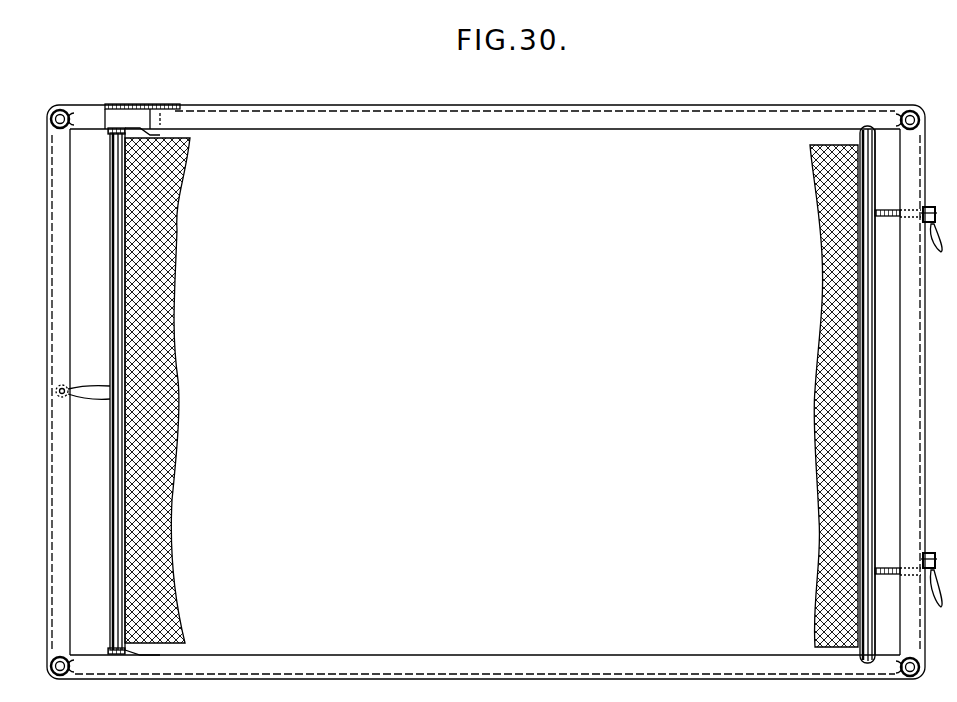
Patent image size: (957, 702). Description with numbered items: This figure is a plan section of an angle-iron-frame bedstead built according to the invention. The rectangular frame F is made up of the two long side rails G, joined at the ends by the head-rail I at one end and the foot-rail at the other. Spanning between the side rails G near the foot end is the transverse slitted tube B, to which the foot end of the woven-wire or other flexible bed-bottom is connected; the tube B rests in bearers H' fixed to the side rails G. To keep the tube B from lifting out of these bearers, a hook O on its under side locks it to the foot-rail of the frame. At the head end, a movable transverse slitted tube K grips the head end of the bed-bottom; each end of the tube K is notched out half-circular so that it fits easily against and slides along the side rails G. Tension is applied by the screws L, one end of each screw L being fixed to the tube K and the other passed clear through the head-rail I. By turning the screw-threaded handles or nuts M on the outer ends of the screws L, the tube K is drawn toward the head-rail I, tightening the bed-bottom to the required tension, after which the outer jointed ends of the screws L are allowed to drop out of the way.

The frame F is at (475, 392).
The side rail G is at (485, 386).
The transverse slitted tube B is at (137, 391).
The movable transverse slitted tube K is at (854, 394).
The head-rail I is at (891, 392).
The bracket H' is at (120, 391).
The hook O is at (83, 384).
The screw L is at (898, 395).
The screw-threaded handle or nut M is at (933, 392).